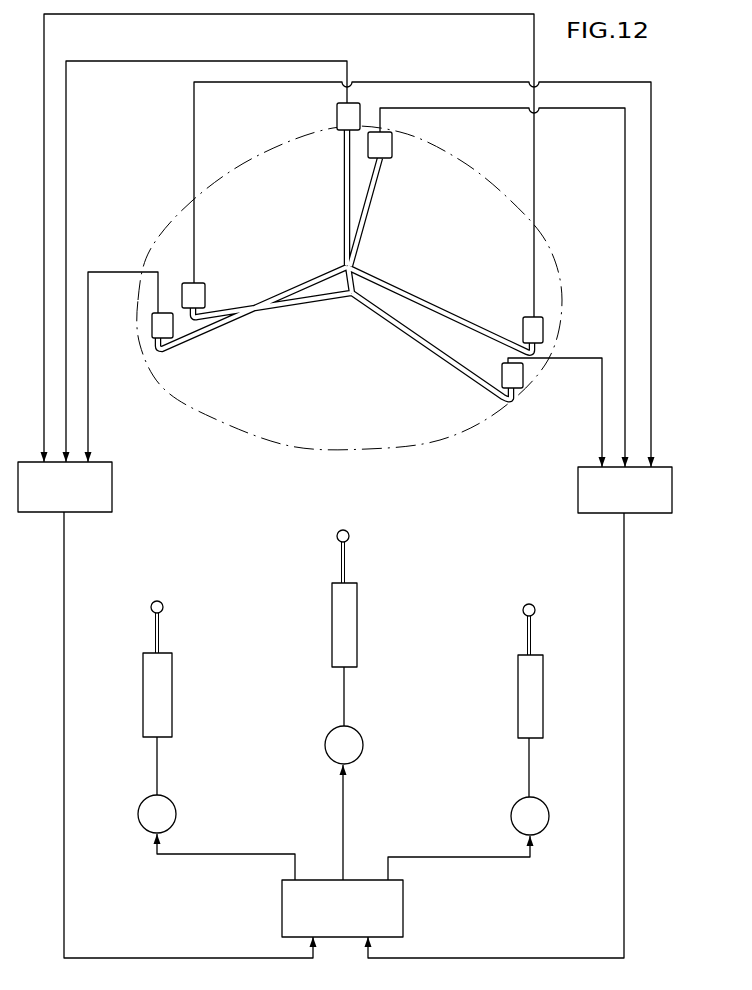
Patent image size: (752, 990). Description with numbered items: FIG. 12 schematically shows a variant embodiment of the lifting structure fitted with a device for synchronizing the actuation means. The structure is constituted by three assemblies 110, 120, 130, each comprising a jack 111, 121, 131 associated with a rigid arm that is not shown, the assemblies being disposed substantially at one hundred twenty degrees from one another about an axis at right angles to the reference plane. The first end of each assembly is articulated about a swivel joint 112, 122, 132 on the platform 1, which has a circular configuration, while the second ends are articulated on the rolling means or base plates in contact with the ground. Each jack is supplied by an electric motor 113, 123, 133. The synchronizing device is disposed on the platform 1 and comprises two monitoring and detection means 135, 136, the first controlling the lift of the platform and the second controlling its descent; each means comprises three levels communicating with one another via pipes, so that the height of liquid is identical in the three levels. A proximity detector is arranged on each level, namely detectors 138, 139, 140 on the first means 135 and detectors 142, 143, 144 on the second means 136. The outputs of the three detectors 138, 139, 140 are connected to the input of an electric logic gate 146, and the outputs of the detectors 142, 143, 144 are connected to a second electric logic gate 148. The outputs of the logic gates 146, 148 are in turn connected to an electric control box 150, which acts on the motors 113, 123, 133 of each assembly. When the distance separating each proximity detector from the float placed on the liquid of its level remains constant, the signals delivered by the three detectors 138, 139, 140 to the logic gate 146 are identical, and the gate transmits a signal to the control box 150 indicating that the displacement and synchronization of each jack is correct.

The platform 1 is at (290, 447).
The first assembly 110 is at (158, 718).
The jack of first assembly 111 is at (167, 713).
The swivel joint of first assembly 112 is at (163, 605).
The electric motor of first assembly 113 is at (142, 820).
The second assembly 120 is at (350, 648).
The jack of second assembly 121 is at (353, 630).
The swivel joint of second assembly 122 is at (350, 533).
The electric motor of second assembly 123 is at (355, 758).
The third assembly 130 is at (522, 720).
The jack of third assembly 131 is at (540, 717).
The swivel joint of third assembly 132 is at (535, 607).
The electric motor of third assembly 133 is at (540, 830).
The first monitoring and detection means 135 is at (332, 239).
The second monitoring and detection means 136 is at (350, 318).
The proximity detector 138 is at (157, 333).
The proximity detector 139 is at (337, 117).
The proximity detector 140 is at (523, 321).
The proximity detector 142 is at (190, 283).
The proximity detector 143 is at (386, 148).
The proximity detector 144 is at (520, 378).
The electric logic gate 146 is at (112, 477).
The electric logic gate 148 is at (578, 482).
The electric control box 150 is at (403, 913).